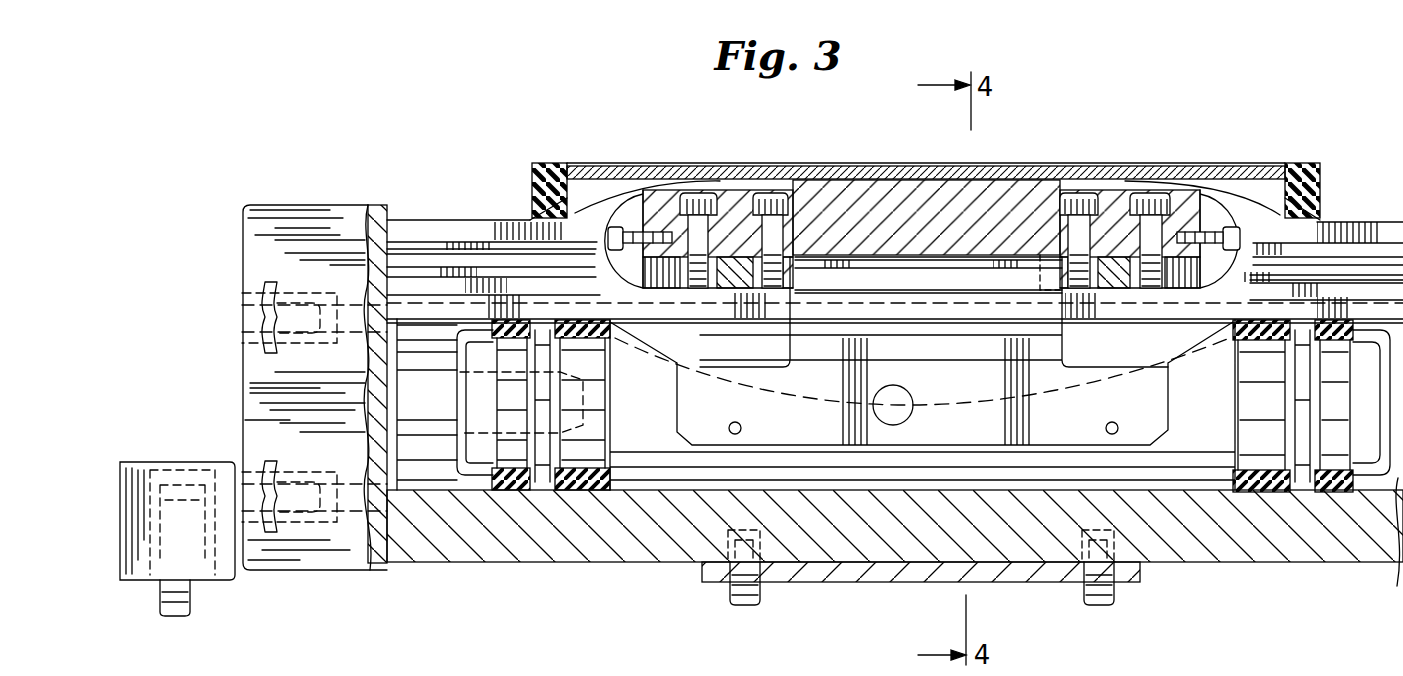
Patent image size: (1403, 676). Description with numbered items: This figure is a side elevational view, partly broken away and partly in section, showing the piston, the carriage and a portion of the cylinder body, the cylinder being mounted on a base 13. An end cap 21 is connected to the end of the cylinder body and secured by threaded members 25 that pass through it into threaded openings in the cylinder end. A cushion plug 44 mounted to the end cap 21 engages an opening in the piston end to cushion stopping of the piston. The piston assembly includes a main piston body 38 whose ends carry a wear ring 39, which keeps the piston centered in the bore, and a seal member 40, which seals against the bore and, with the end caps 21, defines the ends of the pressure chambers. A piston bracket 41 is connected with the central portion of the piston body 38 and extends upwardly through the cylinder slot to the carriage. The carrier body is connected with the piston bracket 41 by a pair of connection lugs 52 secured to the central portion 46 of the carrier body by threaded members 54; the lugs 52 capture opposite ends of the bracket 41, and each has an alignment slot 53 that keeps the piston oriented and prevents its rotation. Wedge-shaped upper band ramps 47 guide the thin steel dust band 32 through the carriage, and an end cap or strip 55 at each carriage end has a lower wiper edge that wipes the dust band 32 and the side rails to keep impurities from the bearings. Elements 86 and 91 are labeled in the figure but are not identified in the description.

The base 13 is at (1010, 575).
The end cap 21 is at (277, 222).
The threaded members 25 is at (238, 322).
The dust band 32 is at (648, 170).
The main piston body 38 is at (847, 478).
The wear ring 39 is at (578, 492).
The seal member 40 is at (508, 492).
The piston bracket 41 is at (968, 333).
The cushion plug 44 is at (427, 425).
The central portion 46 is at (948, 188).
The upper band ramps 47 is at (698, 190).
The connection lugs 52 is at (805, 195).
The alignment slot 53 is at (1040, 268).
The threaded members 54 is at (745, 195).
The end cap 55 is at (540, 210).
The locking pin 86 is at (616, 227).
The housing end 91 is at (548, 205).